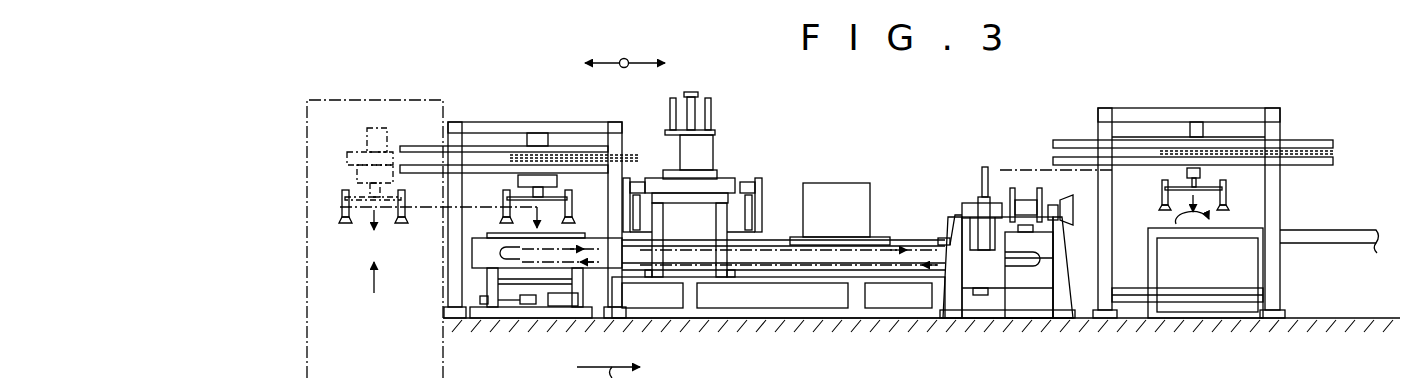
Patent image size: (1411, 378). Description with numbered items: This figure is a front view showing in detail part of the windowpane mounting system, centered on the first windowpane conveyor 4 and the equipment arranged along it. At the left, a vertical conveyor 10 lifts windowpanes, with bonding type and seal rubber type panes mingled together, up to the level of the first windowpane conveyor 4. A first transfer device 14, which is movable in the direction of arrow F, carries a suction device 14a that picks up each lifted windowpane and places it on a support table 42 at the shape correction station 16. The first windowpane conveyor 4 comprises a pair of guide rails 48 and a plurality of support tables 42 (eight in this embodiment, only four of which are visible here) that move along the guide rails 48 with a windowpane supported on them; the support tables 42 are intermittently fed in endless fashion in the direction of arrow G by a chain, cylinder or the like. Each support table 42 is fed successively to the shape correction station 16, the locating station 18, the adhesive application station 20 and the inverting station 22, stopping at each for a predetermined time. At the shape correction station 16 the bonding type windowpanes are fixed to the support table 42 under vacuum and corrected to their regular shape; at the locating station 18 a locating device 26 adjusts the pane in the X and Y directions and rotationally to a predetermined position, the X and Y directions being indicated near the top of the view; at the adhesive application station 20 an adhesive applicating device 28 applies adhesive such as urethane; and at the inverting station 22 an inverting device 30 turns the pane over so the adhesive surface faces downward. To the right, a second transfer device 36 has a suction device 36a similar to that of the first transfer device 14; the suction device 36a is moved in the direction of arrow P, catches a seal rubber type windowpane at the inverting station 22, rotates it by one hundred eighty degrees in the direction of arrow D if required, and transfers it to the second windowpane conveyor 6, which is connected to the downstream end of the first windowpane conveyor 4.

The vertical conveyor 10 is at (440, 100).
The first transfer device 14 is at (497, 122).
The suction device 14a is at (576, 200).
The shape correction station 16 is at (528, 248).
The locating station 18 is at (696, 222).
The adhesive application station 20 is at (845, 228).
The inverting station 22 is at (942, 218).
The locating device 26 is at (715, 143).
The adhesive applicating device 28 is at (823, 183).
The inverting device 30 is at (997, 193).
The second transfer device 36 is at (1230, 108).
The suction device 36a is at (1228, 193).
The first windowpane conveyor 4 is at (770, 285).
The support table 42 is at (493, 233).
The guide rails 48 is at (806, 270).
The second windowpane conveyor 6 is at (1355, 222).
The X direction X is at (638, 63).
The Y direction Y is at (624, 68).
The arrow F is at (428, 210).
The arrow P is at (1020, 168).
The arrow D is at (1192, 230).
The arrow G is at (834, 268).